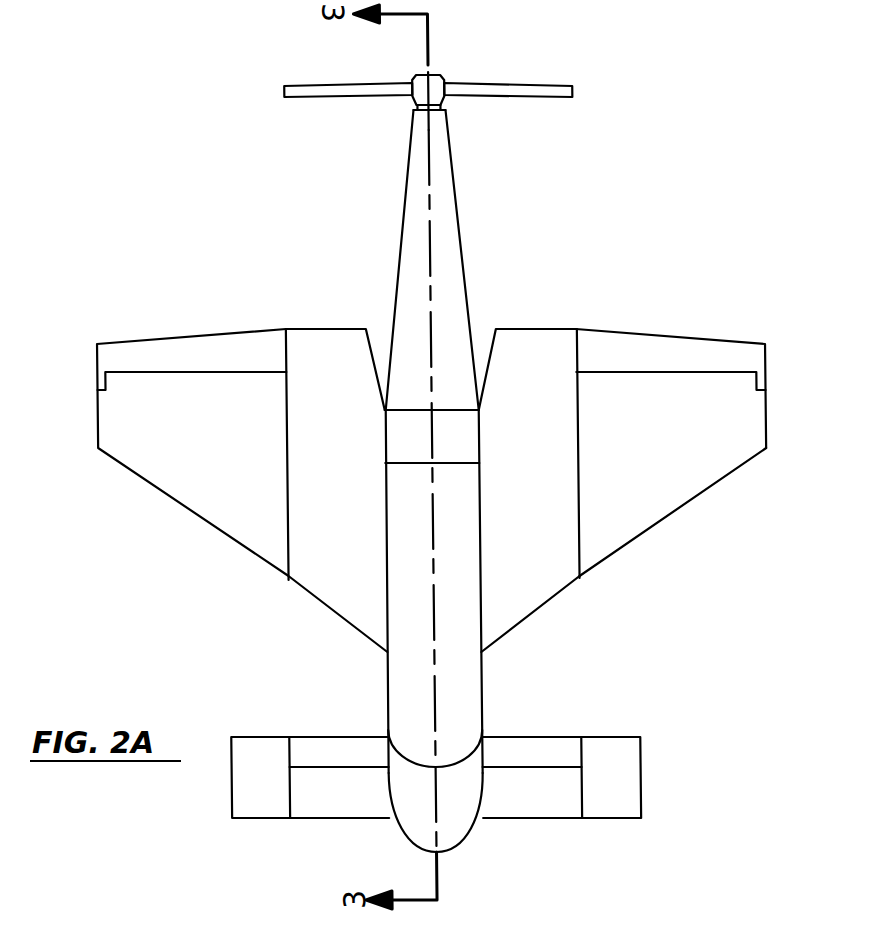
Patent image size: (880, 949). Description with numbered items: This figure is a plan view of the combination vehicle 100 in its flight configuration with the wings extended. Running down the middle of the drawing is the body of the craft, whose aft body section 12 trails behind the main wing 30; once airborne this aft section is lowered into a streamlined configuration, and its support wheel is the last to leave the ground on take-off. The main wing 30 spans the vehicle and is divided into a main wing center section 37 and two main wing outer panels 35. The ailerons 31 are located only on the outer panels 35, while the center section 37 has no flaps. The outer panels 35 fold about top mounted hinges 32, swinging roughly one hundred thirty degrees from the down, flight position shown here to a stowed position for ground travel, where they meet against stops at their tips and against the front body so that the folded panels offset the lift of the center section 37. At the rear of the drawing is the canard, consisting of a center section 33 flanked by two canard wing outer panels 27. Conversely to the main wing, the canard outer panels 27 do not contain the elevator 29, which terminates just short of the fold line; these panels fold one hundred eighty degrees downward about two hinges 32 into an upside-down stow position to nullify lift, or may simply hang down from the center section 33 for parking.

The combination vehicle 100 is at (432, 489).
The aft body section 12 is at (463, 481).
The main wing 30 is at (623, 441).
The ailerons 31 is at (241, 445).
The hinges 32 is at (504, 573).
The main wing outer panels 35 is at (672, 512).
The main wing center section 37 is at (536, 622).
The canard wing outer panels 27 is at (222, 786).
The elevator 29 is at (339, 753).
The canard center section 33 is at (562, 820).